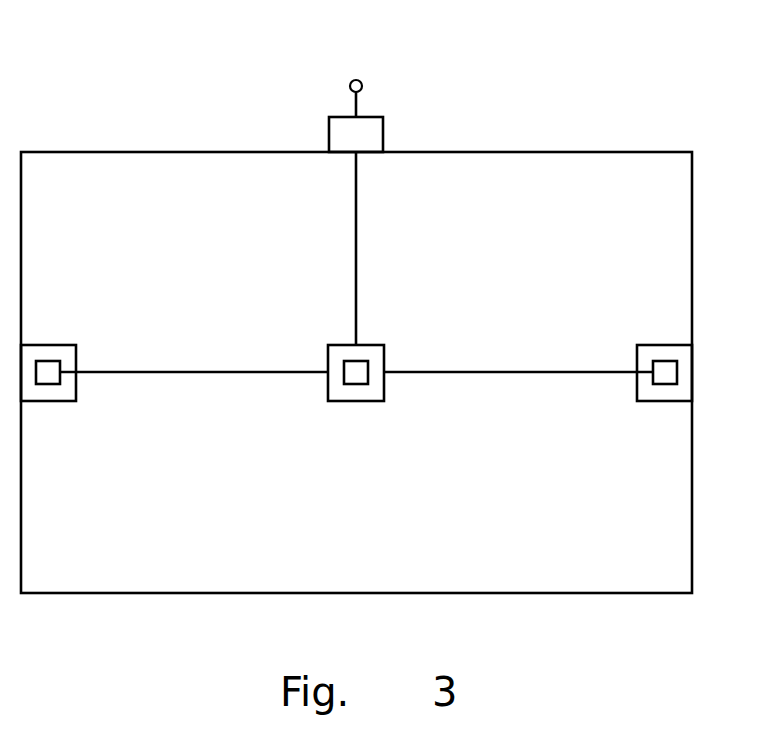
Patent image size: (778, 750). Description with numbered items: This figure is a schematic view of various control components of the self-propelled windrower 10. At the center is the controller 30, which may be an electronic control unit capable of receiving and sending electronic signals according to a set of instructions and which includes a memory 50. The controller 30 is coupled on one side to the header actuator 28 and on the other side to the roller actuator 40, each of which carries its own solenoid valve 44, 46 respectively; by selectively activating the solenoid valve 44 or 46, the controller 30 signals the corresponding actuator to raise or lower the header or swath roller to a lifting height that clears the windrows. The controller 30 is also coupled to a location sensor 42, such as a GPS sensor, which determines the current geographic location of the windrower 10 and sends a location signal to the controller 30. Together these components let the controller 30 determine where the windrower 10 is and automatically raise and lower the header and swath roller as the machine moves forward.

The windrower 10 is at (607, 95).
The header actuator 28 is at (54, 345).
The controller 30 is at (372, 345).
The roller actuator 40 is at (653, 345).
The location sensor 42 is at (383, 121).
The solenoid valve 44 is at (48, 384).
The solenoid valve 46 is at (663, 384).
The memory 50 is at (358, 384).